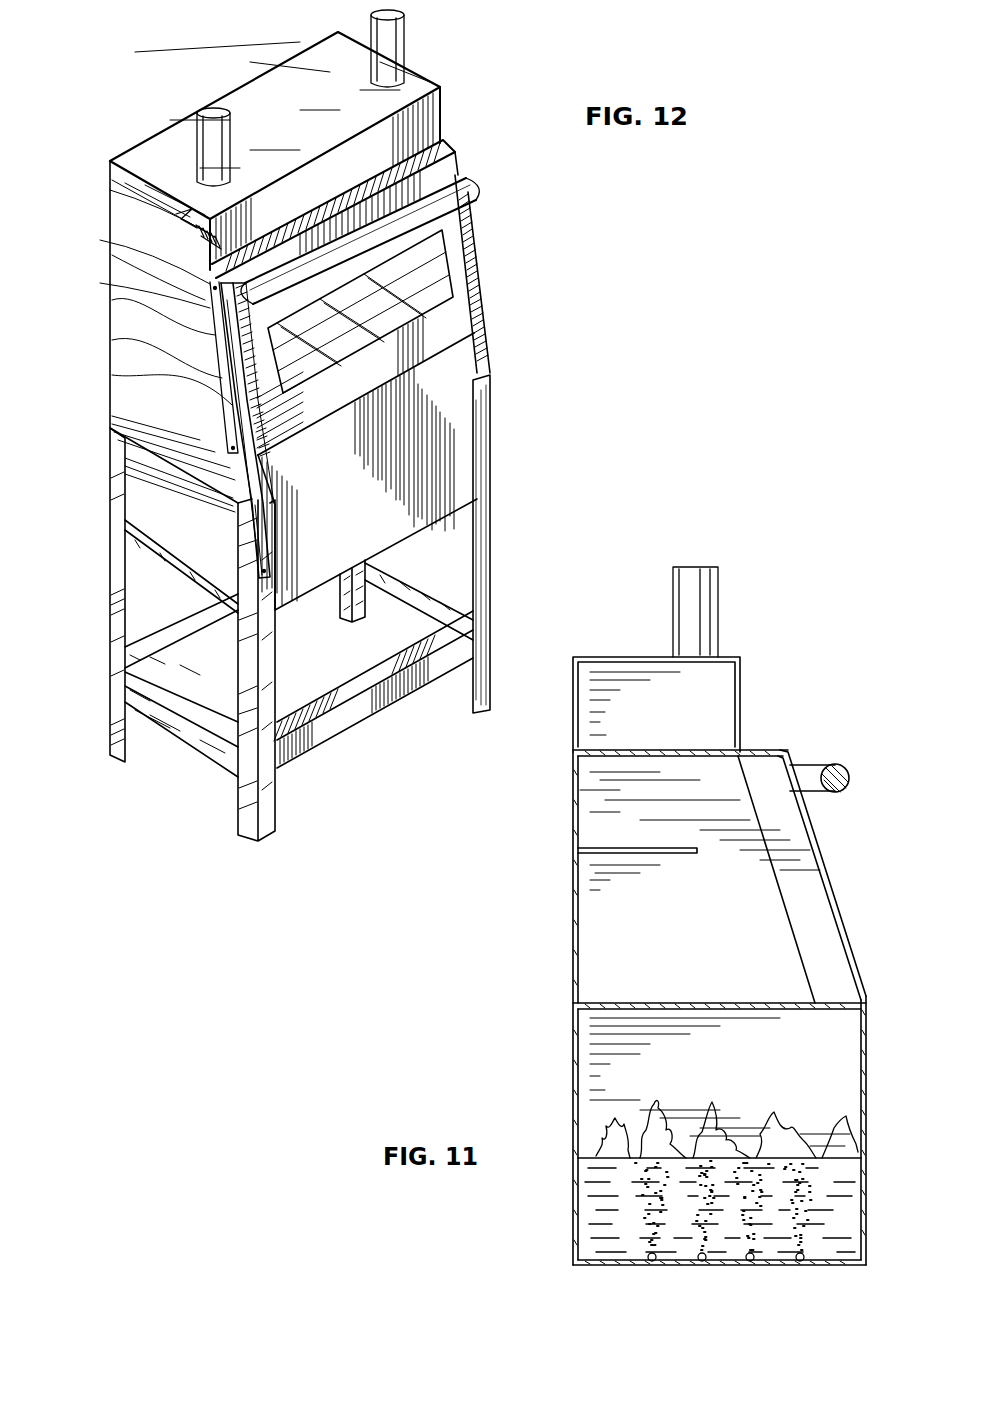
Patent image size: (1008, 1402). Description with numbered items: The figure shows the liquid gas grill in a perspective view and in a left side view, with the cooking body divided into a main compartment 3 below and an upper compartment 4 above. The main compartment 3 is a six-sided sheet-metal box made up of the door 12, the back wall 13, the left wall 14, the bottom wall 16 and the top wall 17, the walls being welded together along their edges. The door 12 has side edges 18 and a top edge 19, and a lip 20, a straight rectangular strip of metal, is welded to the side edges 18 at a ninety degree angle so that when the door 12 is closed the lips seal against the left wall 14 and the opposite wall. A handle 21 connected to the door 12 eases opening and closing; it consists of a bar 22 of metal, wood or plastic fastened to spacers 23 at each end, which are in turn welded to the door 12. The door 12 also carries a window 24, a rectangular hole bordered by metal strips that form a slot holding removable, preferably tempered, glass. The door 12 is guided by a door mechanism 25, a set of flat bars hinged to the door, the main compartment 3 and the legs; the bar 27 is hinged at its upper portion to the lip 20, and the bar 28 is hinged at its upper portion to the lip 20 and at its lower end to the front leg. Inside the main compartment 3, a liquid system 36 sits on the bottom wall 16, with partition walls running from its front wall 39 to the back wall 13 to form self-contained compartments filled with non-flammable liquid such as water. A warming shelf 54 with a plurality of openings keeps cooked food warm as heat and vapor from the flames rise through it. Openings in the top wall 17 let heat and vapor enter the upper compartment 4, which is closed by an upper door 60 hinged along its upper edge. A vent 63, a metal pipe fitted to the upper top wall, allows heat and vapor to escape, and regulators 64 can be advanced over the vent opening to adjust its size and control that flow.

In FIG. 11, the main compartment 3 is at (556, 930).
In FIG. 11, the upper compartment 4 is at (552, 725).
In FIG. 11, the door 12 is at (828, 862).
In FIG. 11, the back wall 13 is at (590, 884).
In FIG. 12, the left wall 14 is at (147, 313).
In FIG. 11, the left wall 14 is at (600, 963).
In FIG. 12, the bottom wall 16 is at (457, 510).
In FIG. 11, the bottom wall 16 is at (697, 1267).
In FIG. 11, the top wall 17 is at (705, 768).
In FIG. 12, the side edges 18 is at (240, 422).
In FIG. 11, the side edges 18 is at (847, 937).
In FIG. 12, the top edge 19 is at (448, 137).
In FIG. 11, the top edge 19 is at (777, 750).
In FIG. 12, the lip 20 is at (236, 383).
In FIG. 11, the lip 20 is at (833, 980).
In FIG. 12, the handle 21 is at (371, 223).
In FIG. 11, the handle 21 is at (848, 787).
In FIG. 12, the bar 22 is at (320, 268).
In FIG. 12, the spacers 23 is at (213, 293).
In FIG. 12, the window 24 is at (443, 313).
In FIG. 12, the door mechanism 25 is at (223, 448).
In FIG. 12, the bar 27 is at (222, 352).
In FIG. 12, the bar 28 is at (260, 533).
In FIG. 11, the liquid system 36 is at (848, 1243).
In FIG. 12, the front wall 39 is at (488, 357).
In FIG. 11, the warming shelf 54 is at (597, 850).
In FIG. 12, the upper door 60 is at (432, 118).
In FIG. 12, the vent 63 is at (203, 146).
In FIG. 11, the vent 63 is at (712, 617).
In FIG. 12, the regulators 64 is at (176, 214).